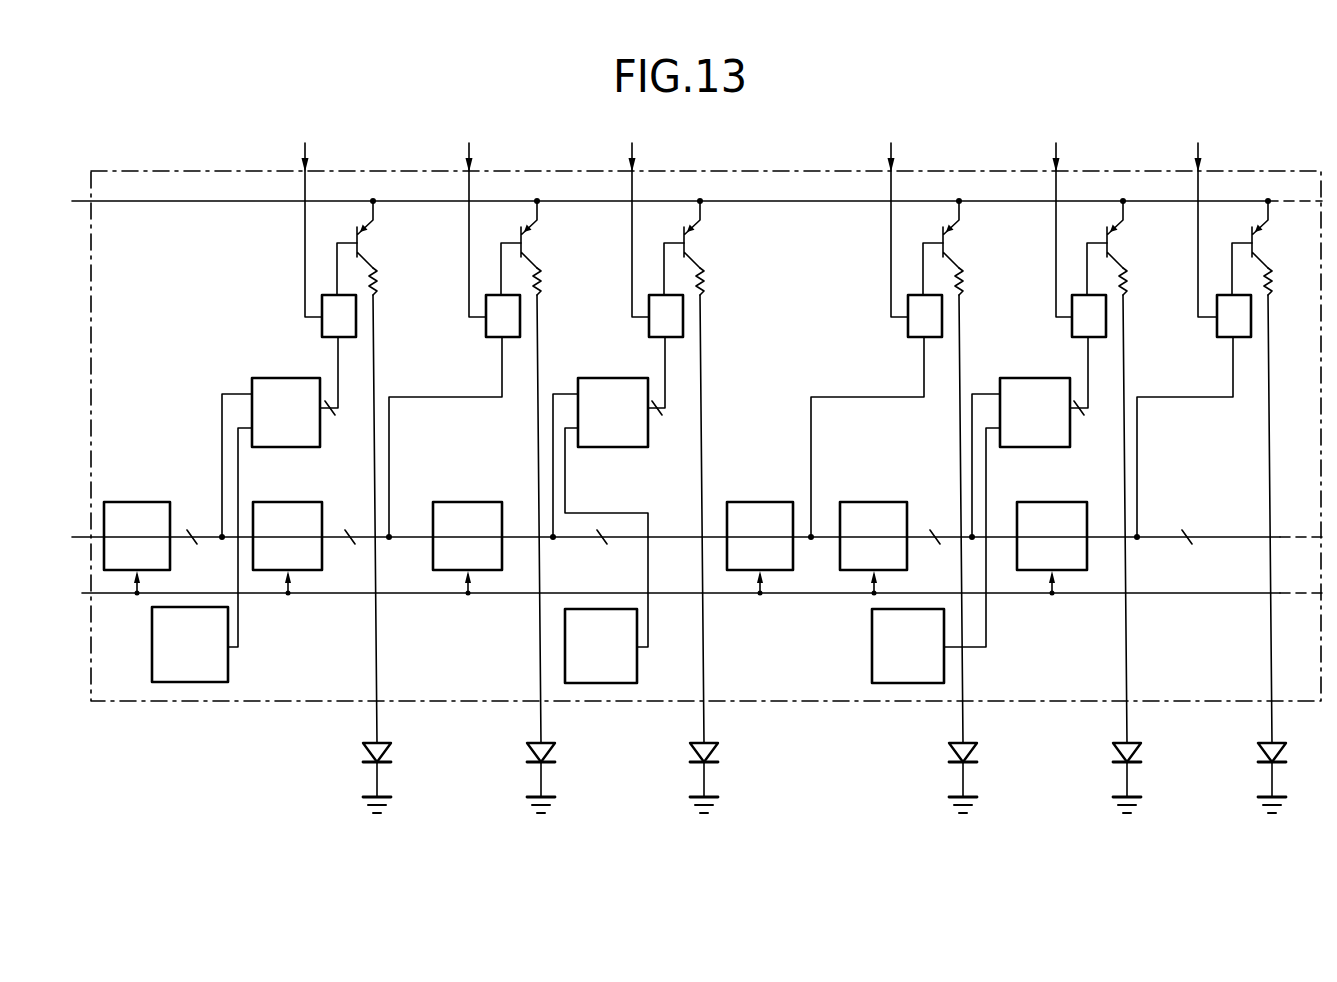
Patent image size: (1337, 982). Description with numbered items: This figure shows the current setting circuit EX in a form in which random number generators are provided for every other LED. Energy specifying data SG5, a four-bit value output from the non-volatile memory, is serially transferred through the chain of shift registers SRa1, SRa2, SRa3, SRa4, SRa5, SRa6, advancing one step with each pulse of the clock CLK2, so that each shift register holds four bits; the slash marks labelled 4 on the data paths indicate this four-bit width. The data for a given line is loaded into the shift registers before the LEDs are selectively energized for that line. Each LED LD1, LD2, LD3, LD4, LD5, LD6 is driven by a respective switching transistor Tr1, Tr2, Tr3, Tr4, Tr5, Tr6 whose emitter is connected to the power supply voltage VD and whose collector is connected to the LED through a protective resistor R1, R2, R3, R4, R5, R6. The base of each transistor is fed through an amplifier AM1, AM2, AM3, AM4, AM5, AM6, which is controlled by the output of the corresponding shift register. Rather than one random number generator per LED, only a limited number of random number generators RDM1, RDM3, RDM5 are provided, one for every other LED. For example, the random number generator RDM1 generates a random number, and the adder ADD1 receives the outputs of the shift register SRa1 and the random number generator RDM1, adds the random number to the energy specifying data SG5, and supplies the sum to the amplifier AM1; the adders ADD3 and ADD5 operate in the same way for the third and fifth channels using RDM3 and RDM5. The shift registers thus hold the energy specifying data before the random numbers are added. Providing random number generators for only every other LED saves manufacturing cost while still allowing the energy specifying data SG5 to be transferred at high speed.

The current setting circuit EX is at (1245, 172).
The power supply voltage VD is at (681, 200).
The energy specifying data SG5 is at (673, 538).
The clock CLK2 is at (672, 593).
The switching transistor Tr1 is at (382, 234).
The switching transistor Tr2 is at (546, 234).
The switching transistor Tr3 is at (709, 234).
The switching transistor Tr4 is at (968, 234).
The switching transistor Tr5 is at (1132, 234).
The switching transistor Tr6 is at (1277, 234).
The protective resistor R1 is at (387, 279).
The protective resistor R2 is at (551, 279).
The protective resistor R3 is at (714, 279).
The protective resistor R4 is at (973, 279).
The protective resistor R5 is at (1137, 279).
The protective resistor R6 is at (1282, 279).
The amplifier AM1 is at (321, 303).
The amplifier AM2 is at (455, 390).
The amplifier AM3 is at (648, 303).
The amplifier AM4 is at (877, 390).
The amplifier AM5 is at (1071, 303).
The amplifier AM6 is at (1194, 390).
The adder ADD1 is at (280, 492).
The adder ADD3 is at (609, 492).
The adder ADD5 is at (1016, 492).
The random number generator RDM1 is at (190, 644).
The random number generator RDM3 is at (601, 646).
The random number generator RDM5 is at (908, 646).
The shift register SRa1 is at (137, 547).
The shift register SRa2 is at (287, 547).
The shift register SRa3 is at (467, 547).
The shift register SRa4 is at (760, 547).
The shift register SRa5 is at (873, 547).
The shift register SRa6 is at (1052, 547).
The LED LD1 is at (401, 554).
The LED LD2 is at (565, 554).
The LED LD3 is at (728, 554).
The LED LD4 is at (987, 554).
The LED LD5 is at (1151, 554).
The LED LD6 is at (1296, 554).
The bus width (four bits) 4 is at (692, 484).